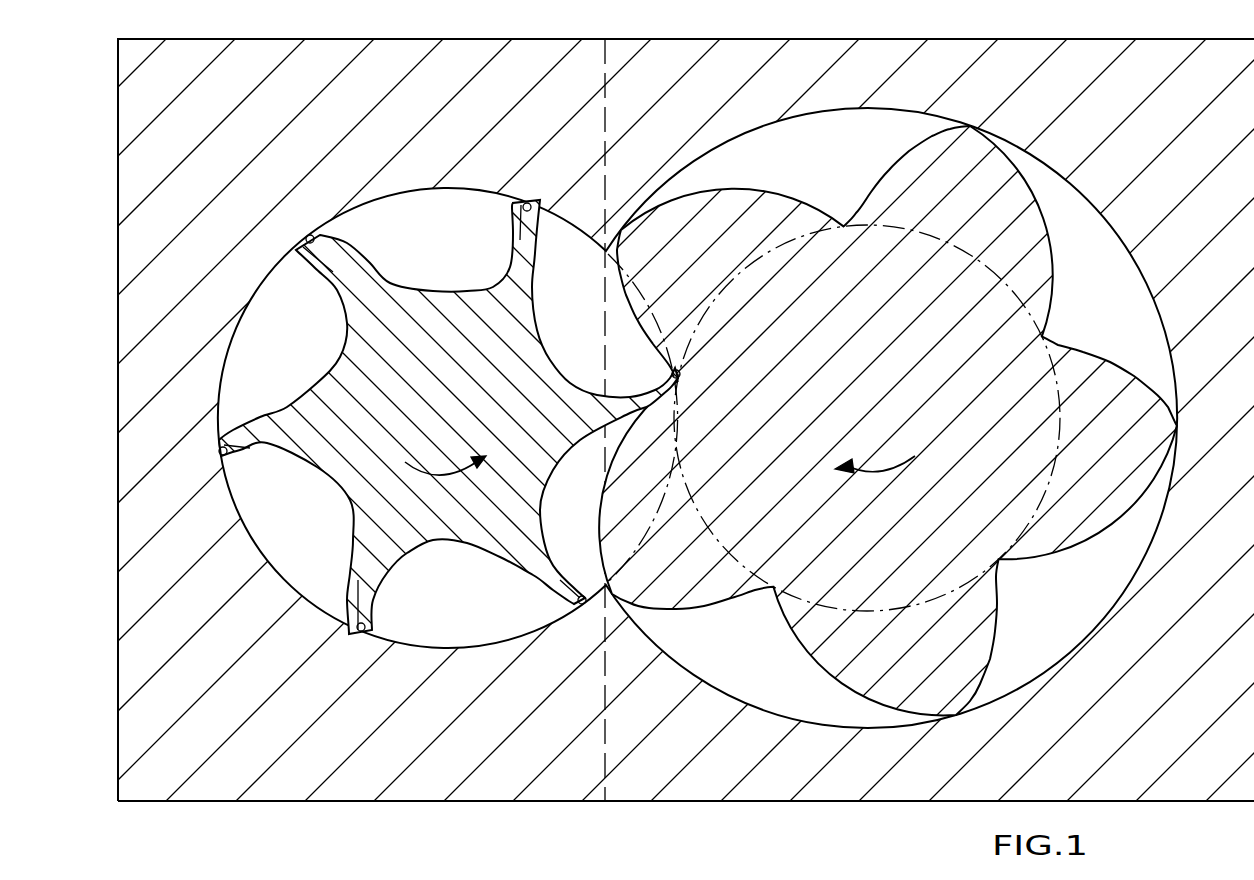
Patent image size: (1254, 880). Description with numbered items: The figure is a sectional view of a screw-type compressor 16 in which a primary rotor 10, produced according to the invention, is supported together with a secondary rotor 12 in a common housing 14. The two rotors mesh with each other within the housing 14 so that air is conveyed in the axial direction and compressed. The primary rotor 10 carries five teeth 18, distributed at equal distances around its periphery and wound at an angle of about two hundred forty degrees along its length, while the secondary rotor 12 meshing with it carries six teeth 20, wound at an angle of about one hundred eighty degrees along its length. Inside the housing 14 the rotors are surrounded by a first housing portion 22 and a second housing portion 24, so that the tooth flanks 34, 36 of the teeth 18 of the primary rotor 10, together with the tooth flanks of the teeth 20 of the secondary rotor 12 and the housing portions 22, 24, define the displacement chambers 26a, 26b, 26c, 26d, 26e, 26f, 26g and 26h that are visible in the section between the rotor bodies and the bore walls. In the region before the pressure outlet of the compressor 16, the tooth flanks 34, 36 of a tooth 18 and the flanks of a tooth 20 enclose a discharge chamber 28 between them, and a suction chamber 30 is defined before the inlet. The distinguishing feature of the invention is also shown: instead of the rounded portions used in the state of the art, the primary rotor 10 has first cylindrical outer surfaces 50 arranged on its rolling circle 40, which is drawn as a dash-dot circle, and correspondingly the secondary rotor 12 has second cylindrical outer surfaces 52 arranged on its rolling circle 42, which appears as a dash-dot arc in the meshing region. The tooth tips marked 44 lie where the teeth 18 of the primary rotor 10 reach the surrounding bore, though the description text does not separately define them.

The primary rotor 10 is at (940, 336).
The secondary rotor 12 is at (400, 373).
The housing 14 is at (407, 53).
The screw-type compressor 16 is at (112, 165).
The teeth of primary rotor 18 is at (670, 217).
The teeth of secondary rotor 20 is at (313, 266).
The first housing portion 22 is at (1176, 734).
The second housing portion 24 is at (220, 685).
The displacement chamber 26a is at (870, 176).
The displacement chamber 26b is at (1114, 296).
The displacement chamber 26c is at (1056, 656).
The displacement chamber 26d is at (786, 676).
The displacement chamber 26e is at (432, 250).
The displacement chamber 26f is at (294, 371).
The displacement chamber 26g is at (334, 541).
The displacement chamber 26h is at (464, 601).
The discharge chamber 28 is at (584, 506).
The suction chamber 30 is at (576, 311).
The tooth flank 34 is at (917, 152).
The tooth flank 36 is at (1047, 226).
The rolling circle of primary rotor 40 is at (928, 603).
The rolling circle of secondary rotor 42 is at (662, 508).
The lobe tip 44 is at (973, 123).
The first cylindrical outer surfaces 50 is at (684, 372).
The second cylindrical outer surfaces 52 is at (312, 232).